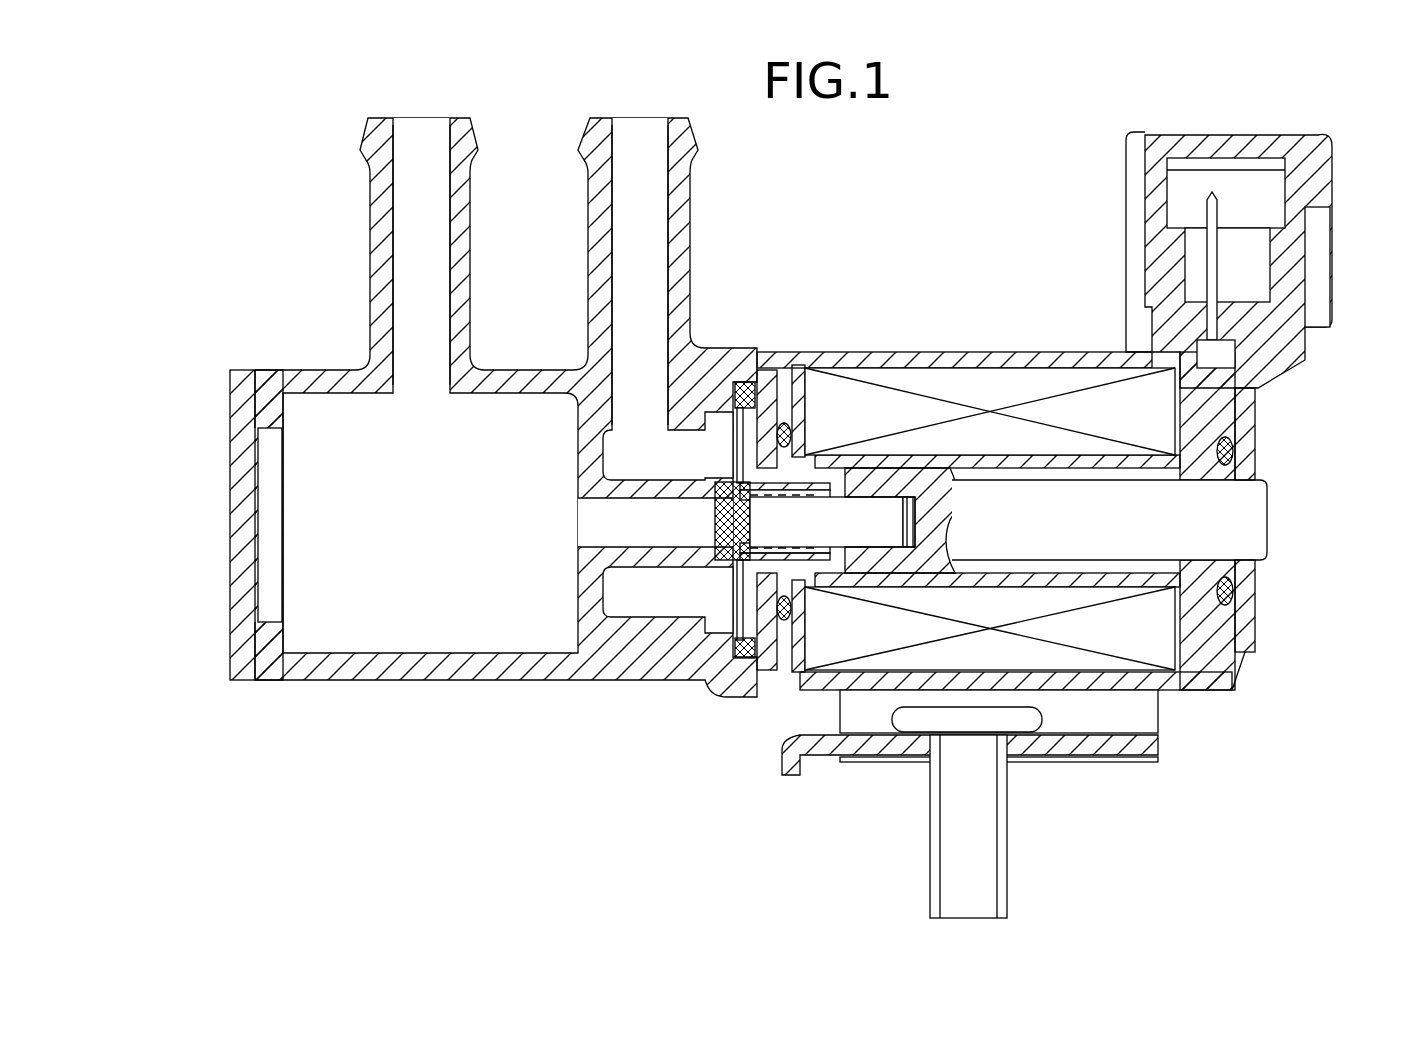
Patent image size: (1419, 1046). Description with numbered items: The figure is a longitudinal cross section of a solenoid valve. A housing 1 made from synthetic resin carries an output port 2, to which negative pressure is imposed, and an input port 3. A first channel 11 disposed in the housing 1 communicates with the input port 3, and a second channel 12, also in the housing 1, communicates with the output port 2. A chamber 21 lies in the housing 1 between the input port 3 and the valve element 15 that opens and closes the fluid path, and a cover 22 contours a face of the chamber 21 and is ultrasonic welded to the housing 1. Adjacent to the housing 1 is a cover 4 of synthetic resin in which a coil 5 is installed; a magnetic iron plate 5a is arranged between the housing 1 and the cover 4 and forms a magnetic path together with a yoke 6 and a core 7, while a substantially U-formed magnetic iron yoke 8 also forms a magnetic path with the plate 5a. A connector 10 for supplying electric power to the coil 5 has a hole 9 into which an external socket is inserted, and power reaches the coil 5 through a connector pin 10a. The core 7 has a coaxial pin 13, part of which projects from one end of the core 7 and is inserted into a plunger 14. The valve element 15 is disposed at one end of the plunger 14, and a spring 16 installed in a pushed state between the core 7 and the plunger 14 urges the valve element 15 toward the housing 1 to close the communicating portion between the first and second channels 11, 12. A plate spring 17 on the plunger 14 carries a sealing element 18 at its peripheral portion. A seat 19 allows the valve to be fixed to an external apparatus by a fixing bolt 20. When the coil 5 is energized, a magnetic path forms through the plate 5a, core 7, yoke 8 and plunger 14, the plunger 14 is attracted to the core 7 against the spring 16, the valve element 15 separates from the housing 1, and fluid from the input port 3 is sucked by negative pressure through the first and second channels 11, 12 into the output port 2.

The housing 1 is at (405, 668).
The output port 2 is at (688, 212).
The input port 3 is at (383, 217).
The cover 4 is at (1075, 362).
The coil 5 is at (1015, 400).
The magnetic plate 5a is at (770, 400).
The yoke 6 is at (1243, 603).
The core 7 is at (1243, 497).
The yoke 8 is at (1192, 660).
The hole 9 is at (1258, 190).
The connector 10 is at (1293, 253).
The connector pin 10a is at (1207, 210).
The first channel 11 is at (597, 532).
The second channel 12 is at (620, 457).
The pin 13 is at (860, 507).
The plunger 14 is at (810, 467).
The valve element 15 is at (735, 440).
The spring 16 is at (770, 622).
The plate spring 17 is at (708, 630).
The sealing element 18 is at (722, 560).
The seat 19 is at (820, 745).
The fixing bolt 20 is at (950, 858).
The chamber 21 is at (336, 628).
The cover 22 is at (240, 460).